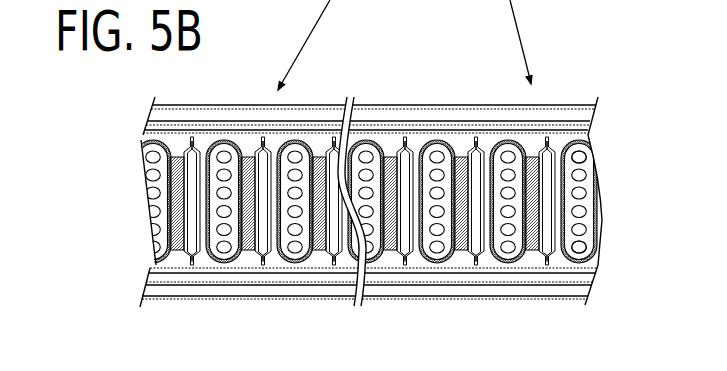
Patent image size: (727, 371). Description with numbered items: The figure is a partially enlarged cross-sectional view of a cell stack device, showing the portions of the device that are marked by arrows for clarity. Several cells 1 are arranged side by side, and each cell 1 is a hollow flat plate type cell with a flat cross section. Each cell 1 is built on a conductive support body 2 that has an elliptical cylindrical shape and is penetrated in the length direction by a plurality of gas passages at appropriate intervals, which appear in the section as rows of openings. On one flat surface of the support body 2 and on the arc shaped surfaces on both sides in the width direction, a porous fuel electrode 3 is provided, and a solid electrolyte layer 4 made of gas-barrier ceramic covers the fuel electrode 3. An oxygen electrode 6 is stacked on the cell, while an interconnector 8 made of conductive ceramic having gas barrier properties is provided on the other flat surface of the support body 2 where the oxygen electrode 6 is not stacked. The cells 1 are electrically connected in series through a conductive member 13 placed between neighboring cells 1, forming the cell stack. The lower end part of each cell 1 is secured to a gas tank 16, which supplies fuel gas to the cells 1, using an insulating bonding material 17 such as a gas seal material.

The cell 1 is at (432, 256).
The support body 2 is at (503, 264).
The fuel electrode 3 is at (587, 263).
The solid electrolyte layer 4 is at (572, 266).
The oxygen electrode 6 is at (478, 148).
The interconnector 8 is at (457, 248).
The conductive member 13 is at (547, 143).
The gas tank 16 is at (560, 115).
The insulating bonding material 17 is at (387, 143).